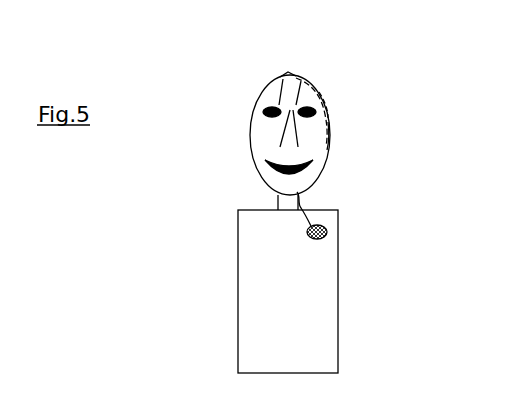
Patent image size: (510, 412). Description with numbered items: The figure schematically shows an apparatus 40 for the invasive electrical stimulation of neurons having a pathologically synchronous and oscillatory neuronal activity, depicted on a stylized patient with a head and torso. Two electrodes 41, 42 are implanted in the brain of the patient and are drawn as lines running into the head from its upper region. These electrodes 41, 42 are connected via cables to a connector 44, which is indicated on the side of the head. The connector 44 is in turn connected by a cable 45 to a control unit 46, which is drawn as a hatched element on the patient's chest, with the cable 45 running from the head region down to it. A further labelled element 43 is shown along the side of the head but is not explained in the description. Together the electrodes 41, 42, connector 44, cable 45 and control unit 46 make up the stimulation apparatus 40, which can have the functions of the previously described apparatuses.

The apparatus 40 is at (293, 66).
The electrode 41 is at (272, 97).
The electrode 42 is at (297, 93).
The hair band 43 is at (322, 85).
The connector 44 is at (329, 110).
The cable 45 is at (336, 140).
The control unit 46 is at (340, 231).